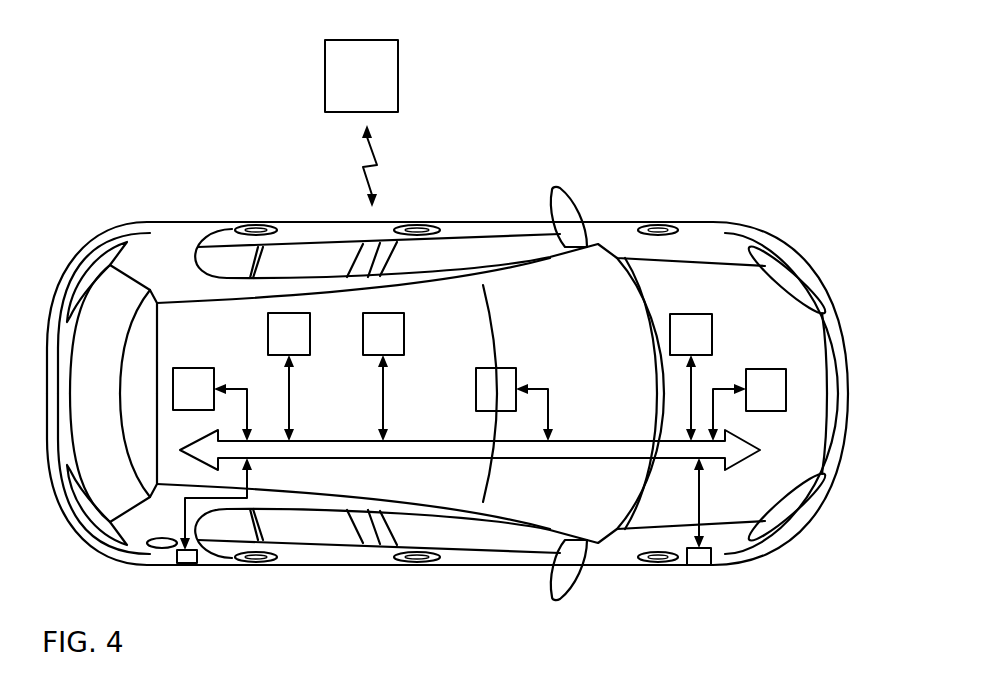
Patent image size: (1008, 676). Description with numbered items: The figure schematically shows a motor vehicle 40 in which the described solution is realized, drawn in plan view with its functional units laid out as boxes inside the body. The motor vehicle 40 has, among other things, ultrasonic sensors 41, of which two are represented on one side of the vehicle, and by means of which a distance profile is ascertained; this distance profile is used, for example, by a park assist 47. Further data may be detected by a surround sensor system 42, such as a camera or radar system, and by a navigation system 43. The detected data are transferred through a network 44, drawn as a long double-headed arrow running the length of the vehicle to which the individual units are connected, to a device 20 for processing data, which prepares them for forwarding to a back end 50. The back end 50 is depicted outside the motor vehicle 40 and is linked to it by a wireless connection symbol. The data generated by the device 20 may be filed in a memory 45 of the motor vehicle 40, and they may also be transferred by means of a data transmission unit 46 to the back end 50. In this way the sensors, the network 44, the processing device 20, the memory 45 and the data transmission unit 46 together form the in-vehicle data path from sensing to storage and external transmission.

The device for processing data 20 is at (678, 315).
The motor vehicle 40 is at (715, 222).
The ultrasonic sensors 41 is at (188, 563).
The surround sensor system 42 is at (488, 368).
The navigation system 43 is at (276, 315).
The network 44 is at (315, 456).
The memory 45 is at (191, 369).
The data transmission unit 46 is at (371, 315).
The park assist 47 is at (765, 370).
The back end 50 is at (397, 78).